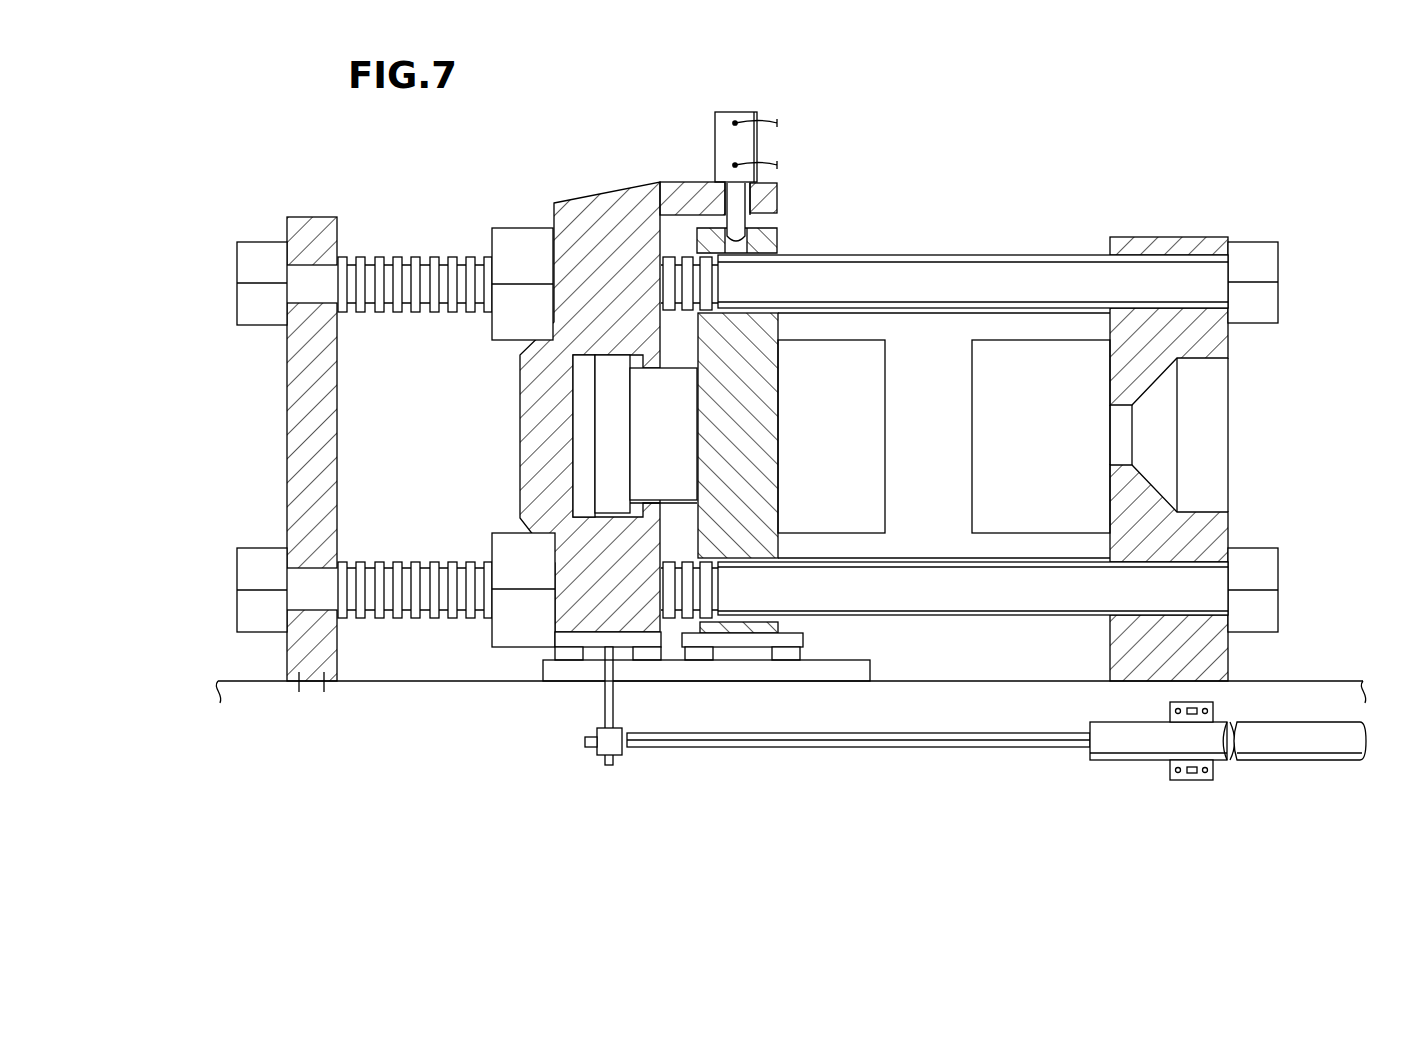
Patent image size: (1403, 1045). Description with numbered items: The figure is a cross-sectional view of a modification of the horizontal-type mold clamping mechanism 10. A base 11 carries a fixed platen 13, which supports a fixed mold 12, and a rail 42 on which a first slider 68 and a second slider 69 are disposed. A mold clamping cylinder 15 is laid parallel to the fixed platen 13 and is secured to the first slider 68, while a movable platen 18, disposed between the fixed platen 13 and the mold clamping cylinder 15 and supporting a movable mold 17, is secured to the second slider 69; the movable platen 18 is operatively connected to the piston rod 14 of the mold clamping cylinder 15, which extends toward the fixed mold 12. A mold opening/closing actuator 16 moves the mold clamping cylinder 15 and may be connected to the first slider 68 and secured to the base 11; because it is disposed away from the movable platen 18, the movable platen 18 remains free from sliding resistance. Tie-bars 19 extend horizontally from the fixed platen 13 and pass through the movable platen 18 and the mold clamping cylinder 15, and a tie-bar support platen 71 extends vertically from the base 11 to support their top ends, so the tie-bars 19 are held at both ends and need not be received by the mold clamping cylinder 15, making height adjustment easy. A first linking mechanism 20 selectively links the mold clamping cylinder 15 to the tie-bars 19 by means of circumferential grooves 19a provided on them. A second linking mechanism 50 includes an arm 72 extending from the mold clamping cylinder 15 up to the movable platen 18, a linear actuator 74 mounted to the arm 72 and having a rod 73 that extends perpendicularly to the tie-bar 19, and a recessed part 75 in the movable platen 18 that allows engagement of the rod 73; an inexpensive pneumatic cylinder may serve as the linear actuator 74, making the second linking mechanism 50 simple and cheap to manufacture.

The mold clamping mechanism 10 is at (1238, 165).
The base 11 is at (1293, 702).
The fixed mold 12 is at (1000, 464).
The fixed platen 13 is at (1158, 237).
The piston rod 14 is at (645, 437).
The mold clamping cylinder 15 is at (607, 202).
The mold opening/closing actuator 16 is at (1135, 742).
The movable mold 17 is at (862, 398).
The movable platen 18 is at (773, 237).
The tie-bar 19 is at (943, 255).
The circumferential groove 19a is at (440, 260).
The first linking mechanism 20 is at (522, 212).
The rail 42 is at (870, 668).
The second linking mechanism 50 is at (798, 137).
The first slider 68 is at (598, 642).
The second slider 69 is at (747, 640).
The tie-bar support platen 71 is at (313, 222).
The arm 72 is at (675, 197).
The rod 73 is at (772, 185).
The linear actuator 74 is at (730, 120).
The recessed part 75 is at (733, 217).